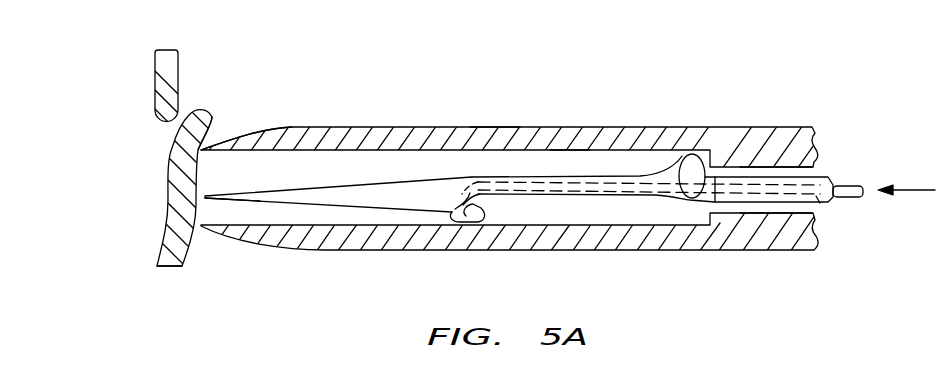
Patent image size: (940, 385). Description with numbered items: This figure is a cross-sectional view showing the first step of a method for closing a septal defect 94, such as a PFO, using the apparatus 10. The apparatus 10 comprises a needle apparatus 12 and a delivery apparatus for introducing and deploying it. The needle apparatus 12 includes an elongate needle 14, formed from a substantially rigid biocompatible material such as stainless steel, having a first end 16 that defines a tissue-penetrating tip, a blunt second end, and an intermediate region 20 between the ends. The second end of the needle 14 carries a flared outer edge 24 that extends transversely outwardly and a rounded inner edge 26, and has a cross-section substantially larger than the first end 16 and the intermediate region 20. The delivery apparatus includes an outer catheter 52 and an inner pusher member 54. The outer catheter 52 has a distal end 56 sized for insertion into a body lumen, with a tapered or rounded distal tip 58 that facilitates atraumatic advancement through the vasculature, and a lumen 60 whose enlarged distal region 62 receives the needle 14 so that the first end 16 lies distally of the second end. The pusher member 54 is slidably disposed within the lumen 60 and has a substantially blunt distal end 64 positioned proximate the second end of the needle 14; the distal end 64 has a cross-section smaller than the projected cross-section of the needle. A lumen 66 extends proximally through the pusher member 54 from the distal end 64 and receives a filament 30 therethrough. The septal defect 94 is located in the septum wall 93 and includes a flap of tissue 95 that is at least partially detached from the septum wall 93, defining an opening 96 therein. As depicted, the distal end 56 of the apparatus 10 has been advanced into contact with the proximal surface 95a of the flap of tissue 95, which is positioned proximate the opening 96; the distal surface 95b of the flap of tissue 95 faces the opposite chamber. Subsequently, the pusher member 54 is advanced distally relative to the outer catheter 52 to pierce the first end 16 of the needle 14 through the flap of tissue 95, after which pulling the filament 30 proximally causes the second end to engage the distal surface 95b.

The apparatus 10 is at (316, 106).
The needle apparatus 12 is at (608, 160).
The elongate needle 14 is at (433, 165).
The first end 16 is at (227, 200).
The intermediate region 20 is at (474, 215).
The flared outer edge 24 is at (675, 127).
The rounded inner edge 26 is at (688, 200).
The filament 30 is at (854, 200).
The outer catheter 52 is at (772, 120).
The pusher member 54 is at (768, 165).
The distal end 56 is at (496, 126).
The distal tip 58 is at (226, 147).
The lumen 60 is at (770, 214).
The enlarged distal region 62 is at (578, 152).
The distal end 64 is at (740, 177).
The lumen 66 is at (820, 204).
The septum wall 93 is at (155, 75).
The septal defect 94 is at (159, 140).
The flap of tissue 95 is at (187, 113).
The proximal surface 95a is at (226, 148).
The distal surface 95b is at (157, 240).
The opening 96 is at (158, 130).